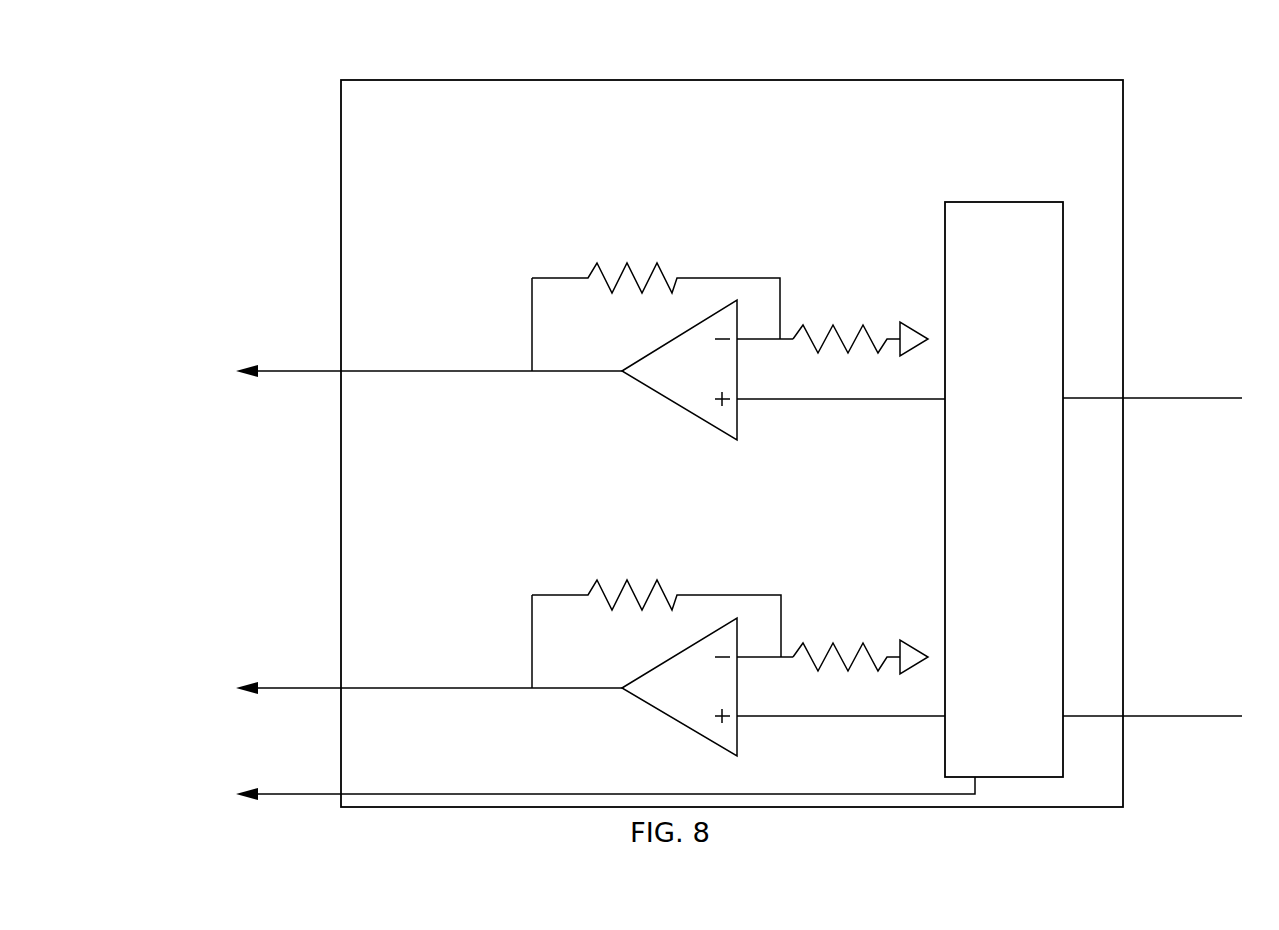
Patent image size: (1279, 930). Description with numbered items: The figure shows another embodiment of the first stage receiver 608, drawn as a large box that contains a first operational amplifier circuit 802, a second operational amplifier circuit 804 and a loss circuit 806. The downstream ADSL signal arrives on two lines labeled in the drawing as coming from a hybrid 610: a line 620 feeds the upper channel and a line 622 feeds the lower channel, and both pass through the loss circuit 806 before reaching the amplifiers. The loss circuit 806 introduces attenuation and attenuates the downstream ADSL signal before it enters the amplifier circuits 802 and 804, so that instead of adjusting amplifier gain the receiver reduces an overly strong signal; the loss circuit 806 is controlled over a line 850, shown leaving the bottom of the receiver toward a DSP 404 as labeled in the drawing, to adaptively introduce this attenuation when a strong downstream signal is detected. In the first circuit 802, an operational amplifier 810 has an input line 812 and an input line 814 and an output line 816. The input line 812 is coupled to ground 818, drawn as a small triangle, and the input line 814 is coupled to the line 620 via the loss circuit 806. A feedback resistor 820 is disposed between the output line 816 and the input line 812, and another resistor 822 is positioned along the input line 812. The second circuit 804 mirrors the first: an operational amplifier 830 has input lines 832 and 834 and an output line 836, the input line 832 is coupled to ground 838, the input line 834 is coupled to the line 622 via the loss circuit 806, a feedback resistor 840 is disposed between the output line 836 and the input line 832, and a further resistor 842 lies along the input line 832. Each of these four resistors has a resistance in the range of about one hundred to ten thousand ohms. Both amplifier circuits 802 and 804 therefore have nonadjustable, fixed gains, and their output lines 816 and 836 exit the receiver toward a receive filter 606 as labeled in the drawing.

The first stage receiver 608 is at (1000, 80).
The loss circuit 806 is at (959, 202).
The first operational amplifier circuit 802 is at (428, 470).
The second operational amplifier circuit 804 is at (434, 590).
The operational amplifier 810 is at (660, 395).
The input line 812 is at (765, 343).
The input line 814 is at (797, 400).
The output line 816 is at (513, 371).
The ground 818 is at (900, 320).
The resistor 820 is at (634, 272).
The resistor 822 is at (833, 325).
The operational amplifier 830 is at (648, 708).
The input line 832 is at (768, 660).
The input line 834 is at (825, 718).
The output line 836 is at (545, 690).
The ground 838 is at (903, 638).
The resistor 840 is at (668, 593).
The resistor 842 is at (833, 640).
The line 850 is at (417, 794).
The line 620 is at (1165, 398).
The line 622 is at (1165, 716).
The receive filter 606 is at (259, 502).
The hybrid 610 is at (1188, 524).
The DSP 404 is at (263, 771).